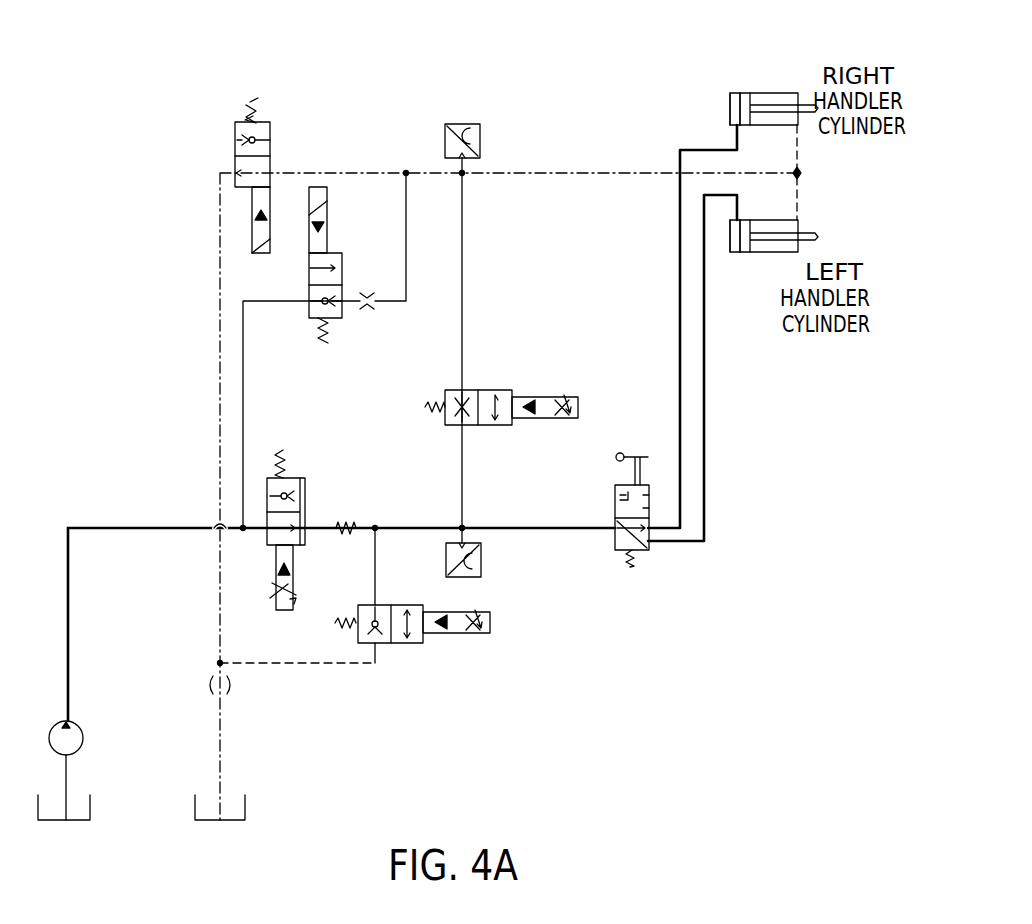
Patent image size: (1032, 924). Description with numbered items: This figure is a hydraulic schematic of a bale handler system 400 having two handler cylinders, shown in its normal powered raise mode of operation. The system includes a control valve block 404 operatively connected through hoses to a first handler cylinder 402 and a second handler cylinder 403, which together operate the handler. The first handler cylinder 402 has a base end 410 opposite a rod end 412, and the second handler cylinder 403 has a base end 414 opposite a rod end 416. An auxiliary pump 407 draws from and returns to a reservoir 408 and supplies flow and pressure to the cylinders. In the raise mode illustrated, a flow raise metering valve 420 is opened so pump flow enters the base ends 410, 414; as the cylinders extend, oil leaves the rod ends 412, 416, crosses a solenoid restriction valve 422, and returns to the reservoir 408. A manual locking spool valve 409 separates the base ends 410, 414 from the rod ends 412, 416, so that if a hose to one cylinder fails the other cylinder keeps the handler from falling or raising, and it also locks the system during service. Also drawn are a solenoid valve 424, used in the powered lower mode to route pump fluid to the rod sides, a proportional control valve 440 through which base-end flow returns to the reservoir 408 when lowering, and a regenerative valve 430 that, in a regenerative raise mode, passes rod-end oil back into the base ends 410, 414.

The bale handler system 400 is at (828, 185).
The first handler cylinder 402 is at (765, 92).
The second handler cylinder 403 is at (766, 252).
The control valve block 404 is at (336, 105).
The auxiliary pump 407 is at (92, 808).
The reservoir 408 is at (247, 808).
The manual locking spool valve 409 is at (617, 552).
The base end 410 is at (733, 92).
The rod end 412 is at (800, 92).
The base end 414 is at (734, 252).
The rod end 416 is at (800, 246).
The flow raise metering valve 420 is at (298, 478).
The solenoid restriction valve 422 is at (240, 122).
The solenoid valve 424 is at (328, 237).
The regenerative valve 430 is at (508, 388).
The proportional control valve 440 is at (412, 645).